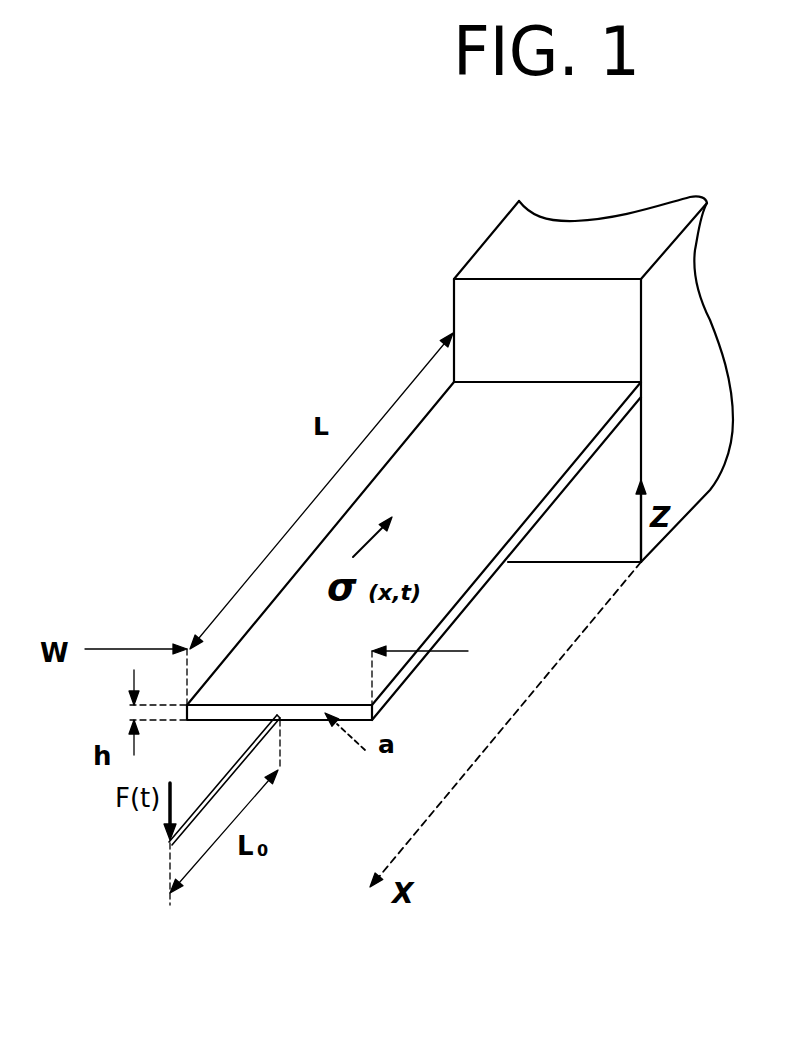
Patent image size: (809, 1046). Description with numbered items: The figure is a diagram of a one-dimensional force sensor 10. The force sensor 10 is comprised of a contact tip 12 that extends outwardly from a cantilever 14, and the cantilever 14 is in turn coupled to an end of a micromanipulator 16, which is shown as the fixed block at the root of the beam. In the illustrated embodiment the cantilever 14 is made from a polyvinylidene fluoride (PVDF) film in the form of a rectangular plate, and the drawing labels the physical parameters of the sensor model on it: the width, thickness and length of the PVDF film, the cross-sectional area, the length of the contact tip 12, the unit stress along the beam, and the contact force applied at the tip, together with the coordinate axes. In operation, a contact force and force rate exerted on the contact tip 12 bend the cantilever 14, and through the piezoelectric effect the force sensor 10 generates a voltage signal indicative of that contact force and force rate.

The force sensor 10 is at (187, 424).
The contact tip 12 is at (165, 840).
The cantilever 14 is at (317, 545).
The micromanipulator 16 is at (700, 320).